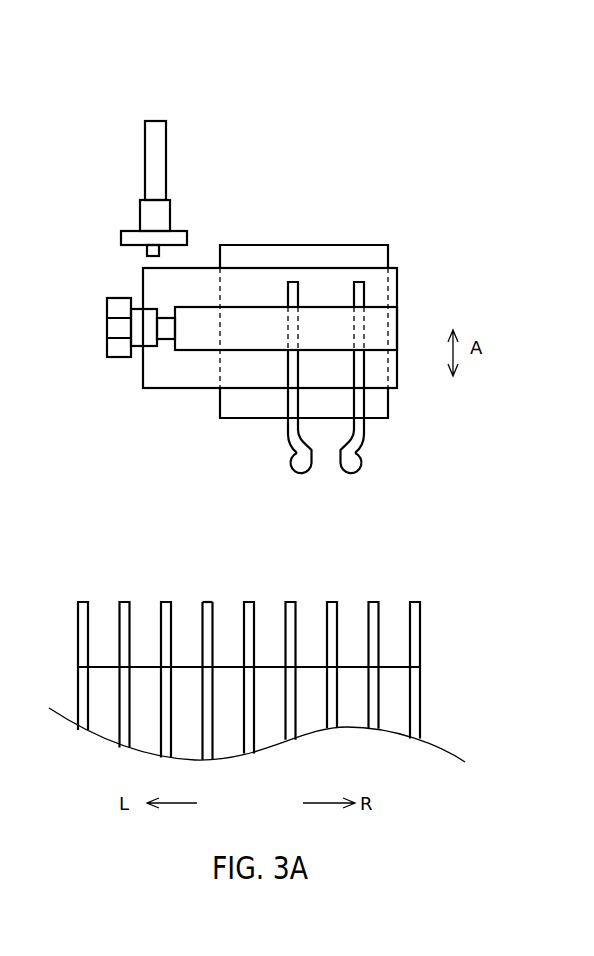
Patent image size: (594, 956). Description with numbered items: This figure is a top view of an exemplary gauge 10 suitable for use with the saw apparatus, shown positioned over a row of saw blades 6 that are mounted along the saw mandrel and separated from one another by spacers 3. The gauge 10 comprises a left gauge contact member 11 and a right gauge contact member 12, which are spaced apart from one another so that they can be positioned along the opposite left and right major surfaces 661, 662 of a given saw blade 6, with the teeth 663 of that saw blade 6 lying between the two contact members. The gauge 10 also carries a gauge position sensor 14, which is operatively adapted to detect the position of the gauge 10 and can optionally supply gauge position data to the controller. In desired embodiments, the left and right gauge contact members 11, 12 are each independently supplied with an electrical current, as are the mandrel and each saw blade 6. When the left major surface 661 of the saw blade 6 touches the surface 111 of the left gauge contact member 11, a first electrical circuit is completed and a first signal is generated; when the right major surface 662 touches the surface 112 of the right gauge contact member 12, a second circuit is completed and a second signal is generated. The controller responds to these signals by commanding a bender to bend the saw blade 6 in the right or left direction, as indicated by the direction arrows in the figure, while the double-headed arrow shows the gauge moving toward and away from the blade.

The gauge 10 is at (459, 127).
The gauge position sensor 14 is at (167, 177).
The left gauge contact member 11 is at (301, 398).
The surface of left gauge contact member 111 is at (310, 466).
The right gauge contact member 12 is at (390, 399).
The surface of right gauge contact member 112 is at (341, 452).
The spacers 3 is at (394, 670).
The saw blades 6 is at (332, 601).
The teeth of saw blade 663 is at (184, 638).
The left major surface of saw blade 661 is at (202, 616).
The right major surface of saw blade 662 is at (235, 659).